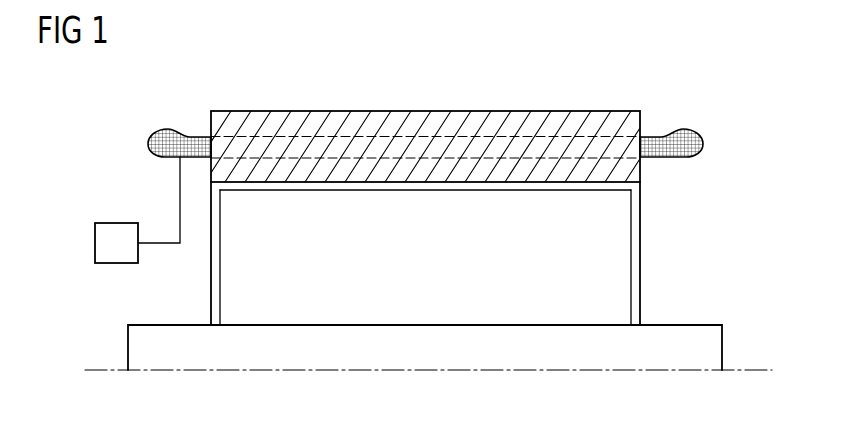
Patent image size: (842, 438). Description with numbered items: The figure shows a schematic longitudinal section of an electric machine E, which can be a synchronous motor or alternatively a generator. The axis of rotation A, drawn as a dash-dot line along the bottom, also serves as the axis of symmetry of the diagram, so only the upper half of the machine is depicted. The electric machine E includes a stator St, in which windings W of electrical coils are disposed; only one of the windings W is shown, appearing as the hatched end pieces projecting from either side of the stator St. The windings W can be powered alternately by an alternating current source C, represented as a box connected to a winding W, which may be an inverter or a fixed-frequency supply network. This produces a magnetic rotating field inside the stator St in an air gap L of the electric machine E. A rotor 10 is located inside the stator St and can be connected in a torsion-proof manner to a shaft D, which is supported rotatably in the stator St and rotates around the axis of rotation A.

The winding W is at (513, 130).
The stator St is at (573, 122).
The electric machine E is at (668, 78).
The air gap L is at (625, 186).
The rotor 10 is at (617, 229).
The shaft D is at (703, 322).
The axis of rotation A is at (758, 370).
The alternating current source C is at (113, 222).